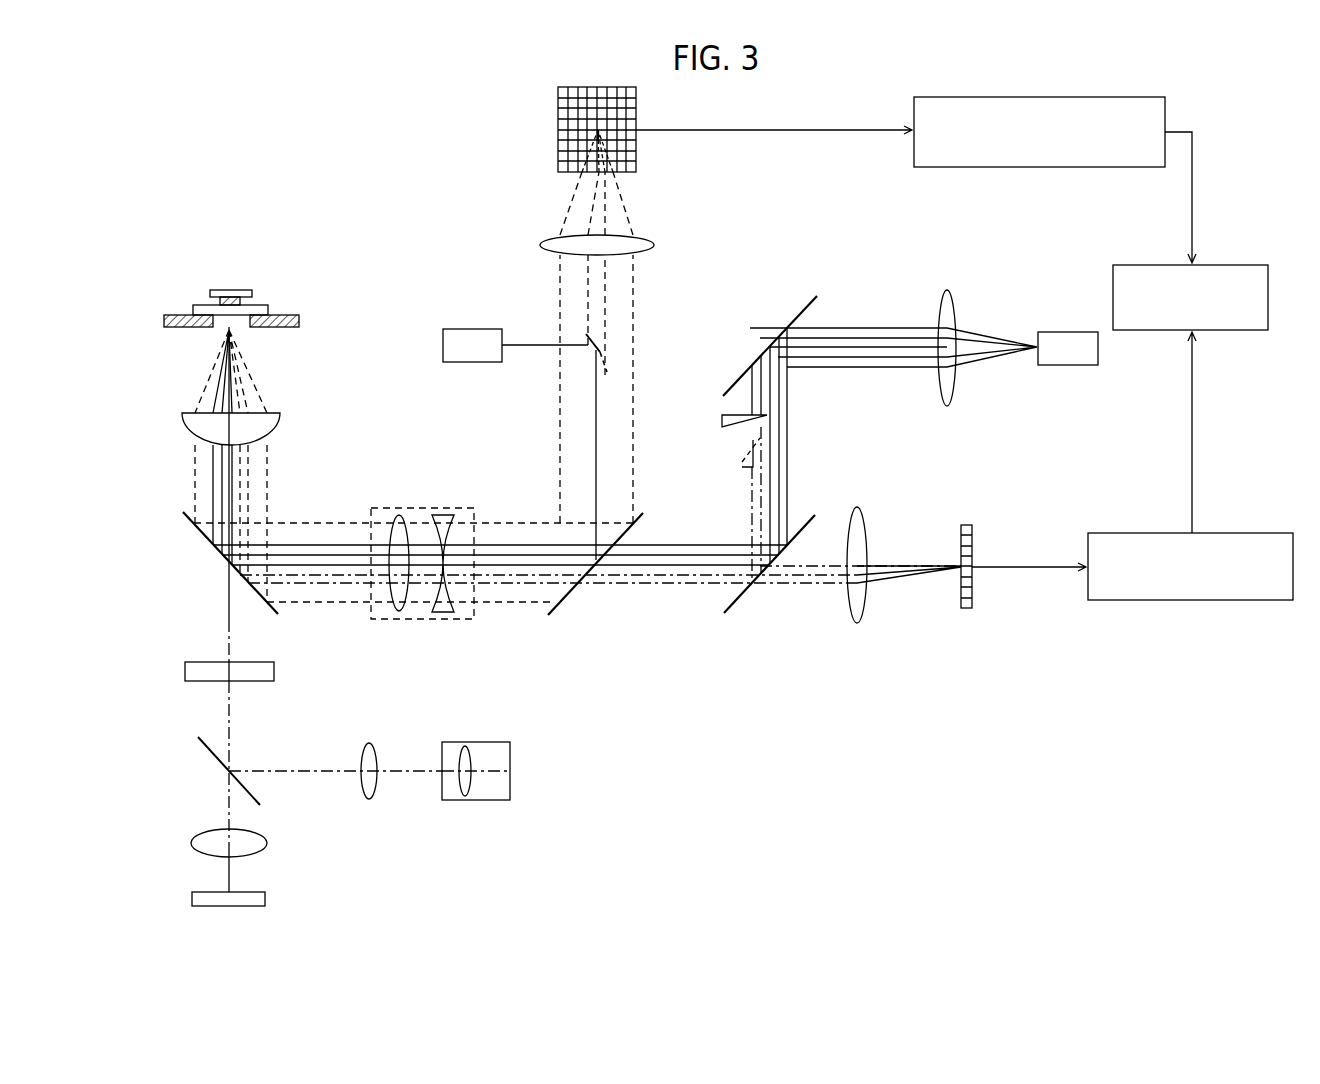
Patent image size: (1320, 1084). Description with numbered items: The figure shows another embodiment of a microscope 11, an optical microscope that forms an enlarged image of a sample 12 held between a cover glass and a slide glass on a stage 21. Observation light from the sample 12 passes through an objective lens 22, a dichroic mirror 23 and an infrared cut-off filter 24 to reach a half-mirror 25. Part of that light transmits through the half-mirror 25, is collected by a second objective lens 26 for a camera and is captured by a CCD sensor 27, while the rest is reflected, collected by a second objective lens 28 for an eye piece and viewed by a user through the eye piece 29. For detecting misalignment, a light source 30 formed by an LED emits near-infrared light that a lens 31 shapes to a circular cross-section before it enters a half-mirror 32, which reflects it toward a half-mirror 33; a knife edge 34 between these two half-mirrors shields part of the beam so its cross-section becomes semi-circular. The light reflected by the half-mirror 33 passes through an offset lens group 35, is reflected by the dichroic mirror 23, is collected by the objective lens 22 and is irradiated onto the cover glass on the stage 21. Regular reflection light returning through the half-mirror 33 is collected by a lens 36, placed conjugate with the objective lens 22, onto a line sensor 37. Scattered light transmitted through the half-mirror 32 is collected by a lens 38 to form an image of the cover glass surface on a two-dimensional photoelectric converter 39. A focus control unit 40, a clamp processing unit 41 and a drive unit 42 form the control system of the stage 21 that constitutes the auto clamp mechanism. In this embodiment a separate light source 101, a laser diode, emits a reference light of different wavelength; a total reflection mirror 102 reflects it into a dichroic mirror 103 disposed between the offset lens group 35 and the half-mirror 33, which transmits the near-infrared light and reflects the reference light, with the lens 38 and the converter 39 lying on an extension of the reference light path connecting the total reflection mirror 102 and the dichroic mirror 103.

The microscope 11 is at (821, 843).
The sample 12 is at (220, 300).
The stage 21 is at (164, 321).
The objective lens 22 is at (184, 428).
The dichroic mirror 23 is at (201, 532).
The infrared cut-off filter 24 is at (274, 671).
The half-mirror 25 is at (216, 758).
The second objective lens (for a camera) 26 is at (190, 842).
The CCD sensor 27 is at (192, 898).
The second objective lens (for an eye piece) 28 is at (369, 799).
The eye piece 29 is at (475, 800).
The light source 30 is at (1068, 332).
The lens 31 is at (947, 290).
The half-mirror 32 is at (738, 380).
The half-mirror 33 is at (727, 615).
The knife edge 34 is at (720, 420).
The offset lens group 35 is at (425, 508).
The lens 36 is at (857, 623).
The line sensor 37 is at (966, 608).
The lens 38 is at (540, 245).
The two-dimensional photoelectric converter 39 is at (558, 128).
The focus control unit 40 is at (1192, 600).
The clamp processing unit 41 is at (1040, 167).
The drive unit 42 is at (1230, 265).
The light source 101 is at (441, 345).
The total reflection mirror 102 is at (602, 349).
The dichroic mirror 103 is at (553, 618).